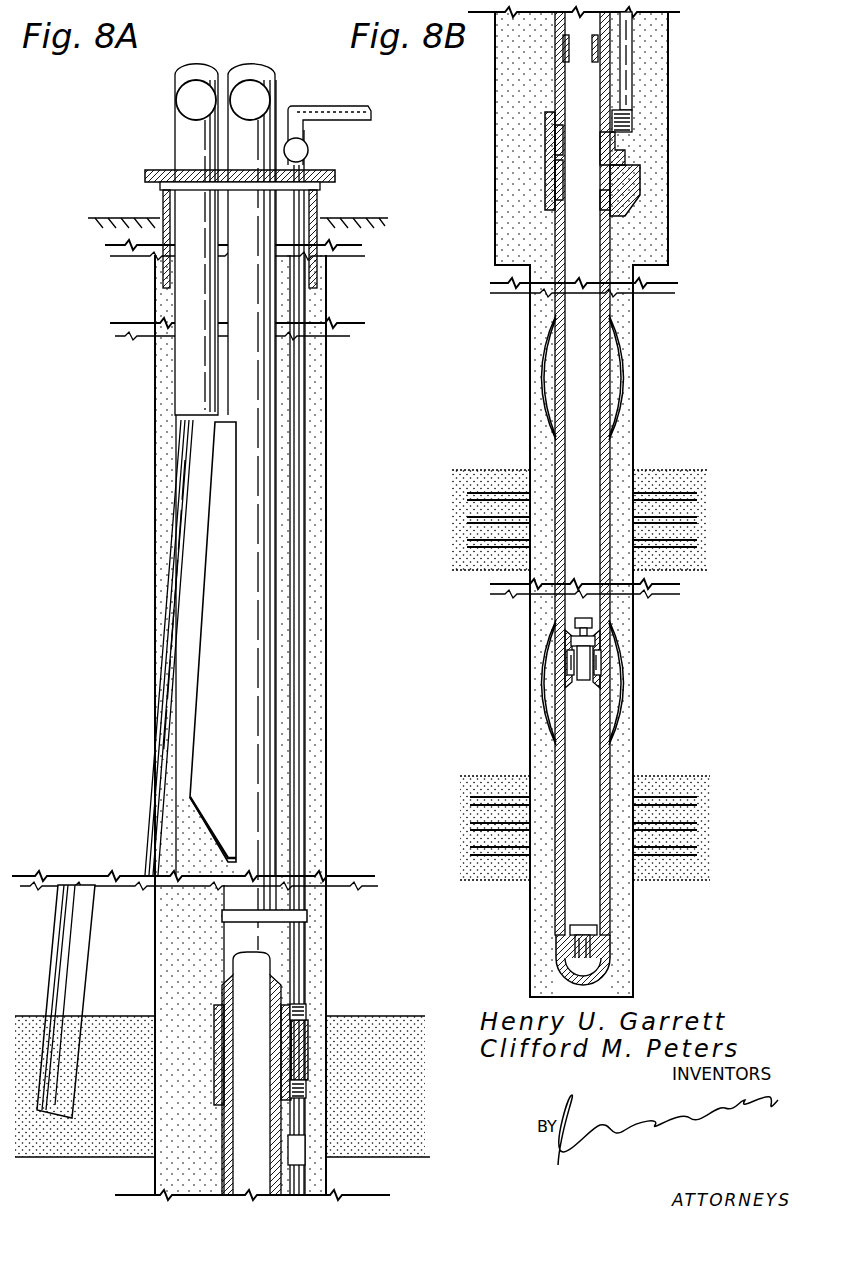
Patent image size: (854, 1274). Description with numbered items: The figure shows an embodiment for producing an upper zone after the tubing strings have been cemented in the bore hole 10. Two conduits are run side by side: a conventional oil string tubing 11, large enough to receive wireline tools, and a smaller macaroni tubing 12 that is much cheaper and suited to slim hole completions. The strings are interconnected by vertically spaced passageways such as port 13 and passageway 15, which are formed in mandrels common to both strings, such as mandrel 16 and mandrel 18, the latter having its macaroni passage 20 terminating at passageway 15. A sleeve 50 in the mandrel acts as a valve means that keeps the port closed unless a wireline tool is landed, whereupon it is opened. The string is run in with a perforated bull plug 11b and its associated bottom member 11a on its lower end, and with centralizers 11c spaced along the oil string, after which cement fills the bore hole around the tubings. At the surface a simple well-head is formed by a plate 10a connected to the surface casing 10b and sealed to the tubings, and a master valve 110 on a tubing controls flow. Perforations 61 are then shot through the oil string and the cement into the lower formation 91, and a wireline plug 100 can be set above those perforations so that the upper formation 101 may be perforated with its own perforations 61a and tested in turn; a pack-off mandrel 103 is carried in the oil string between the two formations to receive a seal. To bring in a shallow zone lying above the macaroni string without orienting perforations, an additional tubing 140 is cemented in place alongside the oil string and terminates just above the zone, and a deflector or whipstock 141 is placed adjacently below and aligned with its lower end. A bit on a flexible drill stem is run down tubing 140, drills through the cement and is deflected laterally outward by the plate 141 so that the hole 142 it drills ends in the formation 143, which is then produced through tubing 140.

In FIG. 8A, the bore hole 10 is at (155, 358).
In FIG. 8B, the bore hole 10 is at (668, 163).
In FIG. 8A, the plate 10a is at (150, 171).
In FIG. 8A, the surface casing 10b is at (163, 200).
In FIG. 8A, the tubing 11 is at (264, 420).
In FIG. 8B, the tubing 11 is at (607, 238).
In FIG. 8B, the tubing bottom plug bolt 11a is at (595, 948).
In FIG. 8B, the perforated bull plug 11b is at (605, 957).
In FIG. 8B, the centralizers 11c is at (620, 329).
In FIG. 8A, the macaroni tubing 12 is at (300, 374).
In FIG. 8B, the macaroni tubing 12 is at (631, 85).
In FIG. 8A, the passageway 13 is at (283, 1050).
In FIG. 8B, the passageway 15 is at (612, 160).
In FIG. 8A, the mandrel 16 is at (308, 1068).
In FIG. 8B, the mandrel 18 is at (645, 184).
In FIG. 8A, the passage 20 is at (300, 1030).
In FIG. 8B, the passage 20 is at (630, 138).
In FIG. 8B, the sleeve 50 is at (560, 174).
In FIG. 8B, the perforations 61 is at (677, 800).
In FIG. 8B, the upper perforations 61a is at (675, 498).
In FIG. 8B, the lower formation 91 is at (490, 780).
In FIG. 8B, the wireline plug 100 is at (590, 664).
In FIG. 8B, the upper formation 101 is at (485, 474).
In FIG. 8B, the pack-off mandrel 103 is at (600, 642).
In FIG. 8A, the master valve 110 is at (309, 148).
In FIG. 8A, the additional tubing 140 is at (192, 296).
In FIG. 8A, the whipstock 141 is at (220, 672).
In FIG. 8A, the hole 142 is at (186, 596).
In FIG. 8A, the formation 143 is at (385, 1030).